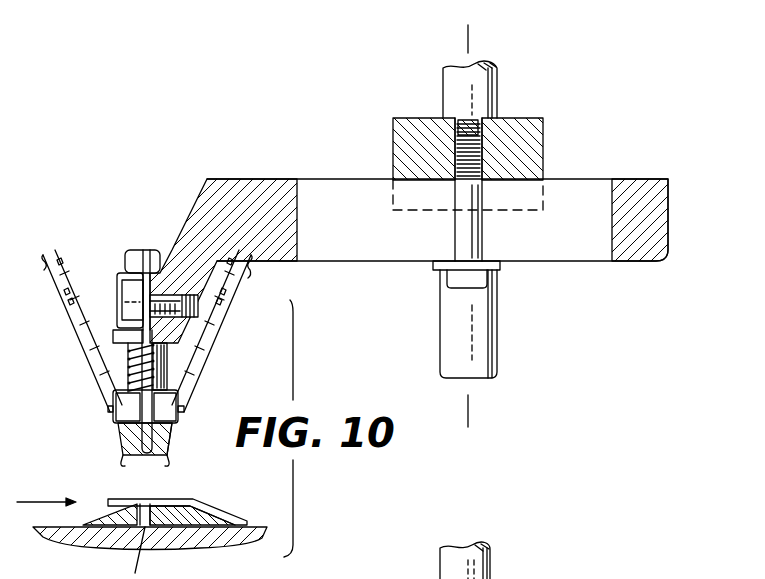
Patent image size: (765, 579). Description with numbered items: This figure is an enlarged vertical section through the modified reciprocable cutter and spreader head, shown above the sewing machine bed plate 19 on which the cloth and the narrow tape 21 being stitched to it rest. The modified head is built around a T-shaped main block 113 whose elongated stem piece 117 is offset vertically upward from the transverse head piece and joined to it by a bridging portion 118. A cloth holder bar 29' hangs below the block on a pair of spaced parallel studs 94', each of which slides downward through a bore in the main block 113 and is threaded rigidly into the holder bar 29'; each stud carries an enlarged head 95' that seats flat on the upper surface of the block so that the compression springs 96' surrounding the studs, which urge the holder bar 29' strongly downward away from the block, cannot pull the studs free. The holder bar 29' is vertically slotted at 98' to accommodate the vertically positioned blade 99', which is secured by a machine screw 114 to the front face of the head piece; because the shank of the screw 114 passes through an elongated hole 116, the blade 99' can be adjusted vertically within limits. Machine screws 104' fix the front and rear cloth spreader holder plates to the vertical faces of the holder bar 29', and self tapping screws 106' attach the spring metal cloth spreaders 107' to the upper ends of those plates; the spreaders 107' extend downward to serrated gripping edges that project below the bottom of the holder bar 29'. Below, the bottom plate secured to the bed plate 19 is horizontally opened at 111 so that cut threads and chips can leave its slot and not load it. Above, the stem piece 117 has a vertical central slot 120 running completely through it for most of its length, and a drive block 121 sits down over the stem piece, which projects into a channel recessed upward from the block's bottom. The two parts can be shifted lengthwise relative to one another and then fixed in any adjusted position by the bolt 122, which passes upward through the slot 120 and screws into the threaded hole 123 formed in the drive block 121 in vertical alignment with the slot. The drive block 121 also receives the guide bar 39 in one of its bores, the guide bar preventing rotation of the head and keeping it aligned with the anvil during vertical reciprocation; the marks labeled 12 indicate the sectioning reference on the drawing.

The section line indicator 12 is at (470, 30).
The sewing machine bed plate 19 is at (200, 545).
The narrow tape 21 is at (120, 502).
The cloth holder bar 29' is at (193, 439).
The guide bar 39 is at (492, 330).
The studs 94' is at (192, 367).
The enlarged head 95' is at (161, 263).
The compression springs 96' is at (203, 366).
The vertical slot 98' is at (127, 439).
The blade 99' is at (102, 391).
The machine screws 104' is at (175, 406).
The self tapping screws 106' is at (151, 331).
The cloth spreaders 107' is at (176, 465).
The horizontal opening 111 is at (103, 527).
The T-shaped main block 113 is at (668, 232).
The machine screw 114 is at (127, 300).
The elongated hole 116 is at (143, 287).
The stem piece 117 is at (223, 243).
The bridging portion 118 is at (200, 240).
The vertical central slot 120 is at (385, 253).
The drive block 121 is at (543, 151).
The bolt 122 is at (482, 240).
The threaded hole 123 is at (478, 130).